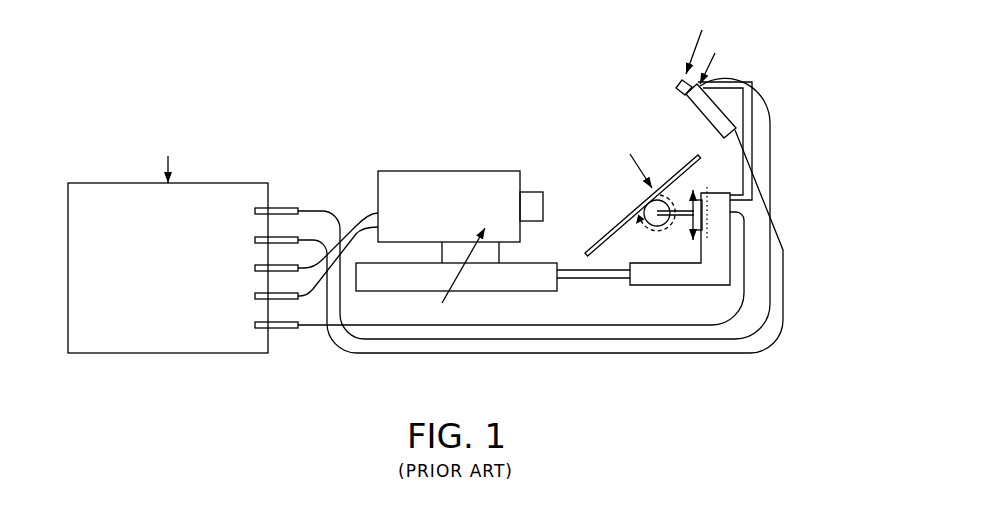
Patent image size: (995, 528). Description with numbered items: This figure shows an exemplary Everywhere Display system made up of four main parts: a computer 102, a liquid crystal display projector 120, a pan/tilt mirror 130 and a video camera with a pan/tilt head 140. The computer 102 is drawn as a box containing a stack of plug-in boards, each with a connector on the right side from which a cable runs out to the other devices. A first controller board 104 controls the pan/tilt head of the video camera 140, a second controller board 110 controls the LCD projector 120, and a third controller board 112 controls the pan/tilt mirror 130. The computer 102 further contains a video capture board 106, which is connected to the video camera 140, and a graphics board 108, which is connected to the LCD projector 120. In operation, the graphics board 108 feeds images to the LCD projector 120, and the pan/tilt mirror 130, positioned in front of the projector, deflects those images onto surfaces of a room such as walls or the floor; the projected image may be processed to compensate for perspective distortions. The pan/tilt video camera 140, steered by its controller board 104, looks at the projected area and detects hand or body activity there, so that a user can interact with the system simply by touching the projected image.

The computer 102 is at (67, 209).
The first controller board 104 is at (238, 202).
The video capture board 106 is at (140, 240).
The graphics board 108 is at (106, 268).
The second controller board 110 is at (80, 296).
The third controller board 112 is at (223, 332).
The liquid crystal display projector 120 is at (430, 170).
The pan/tilt mirror 130 is at (586, 139).
The video camera with pan/tilt head 140 is at (699, 105).